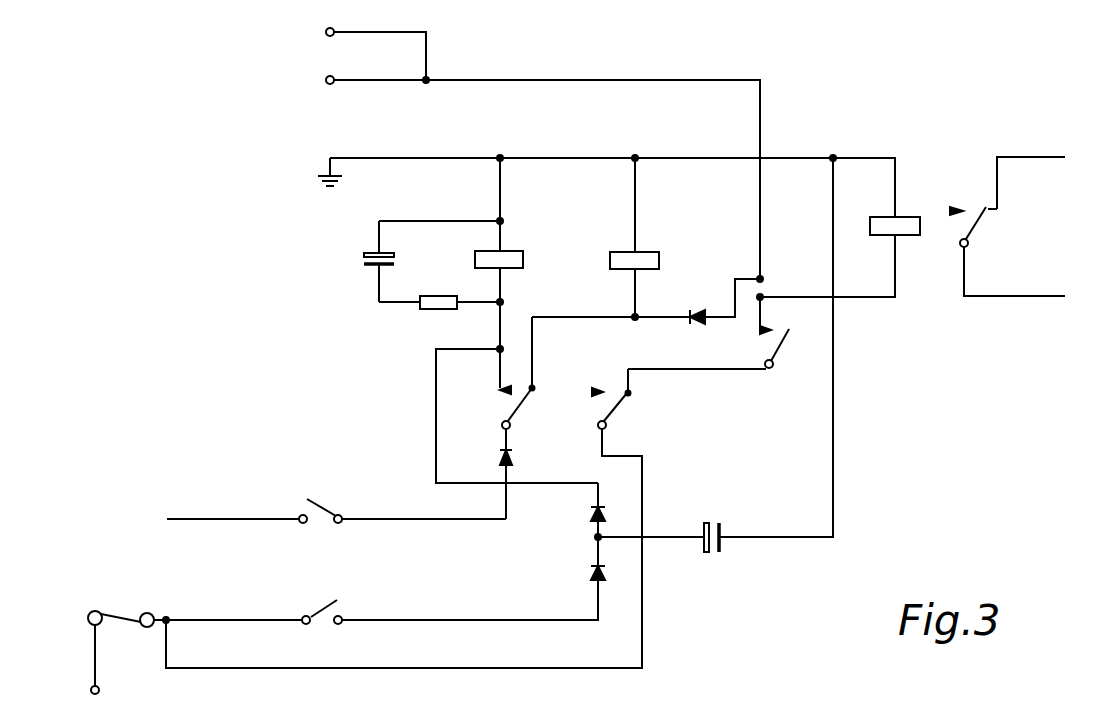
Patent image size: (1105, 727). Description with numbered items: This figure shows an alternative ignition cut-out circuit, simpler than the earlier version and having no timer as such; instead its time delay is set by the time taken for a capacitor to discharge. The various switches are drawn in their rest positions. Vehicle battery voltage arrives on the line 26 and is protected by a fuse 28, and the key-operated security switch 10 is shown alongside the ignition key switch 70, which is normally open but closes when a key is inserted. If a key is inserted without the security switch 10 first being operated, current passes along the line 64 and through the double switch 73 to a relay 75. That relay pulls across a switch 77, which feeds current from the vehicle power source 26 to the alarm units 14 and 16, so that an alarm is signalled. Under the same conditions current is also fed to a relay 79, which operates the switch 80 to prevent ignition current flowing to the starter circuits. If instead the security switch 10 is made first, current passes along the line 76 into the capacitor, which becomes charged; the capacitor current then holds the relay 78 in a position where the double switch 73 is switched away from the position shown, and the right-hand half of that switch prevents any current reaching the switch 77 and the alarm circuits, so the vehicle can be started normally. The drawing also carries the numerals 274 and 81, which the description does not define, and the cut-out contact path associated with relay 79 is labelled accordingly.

The alarm emitter 14 is at (348, 33).
The alarm emitter 16 is at (342, 83).
The capacitor 274 is at (362, 255).
The relay 78 is at (515, 250).
The relay 75 is at (645, 253).
The line 76 is at (436, 383).
The switch 77 is at (780, 350).
The double switch 73 is at (618, 405).
The relay 79 is at (908, 217).
The switch 80 is at (977, 225).
The terminal 81 is at (1063, 156).
The line 64 is at (192, 519).
The ignition key switch 70 is at (325, 510).
The fuse 28 is at (120, 615).
The line 26 is at (97, 687).
The key-operated security switch 10 is at (320, 607).